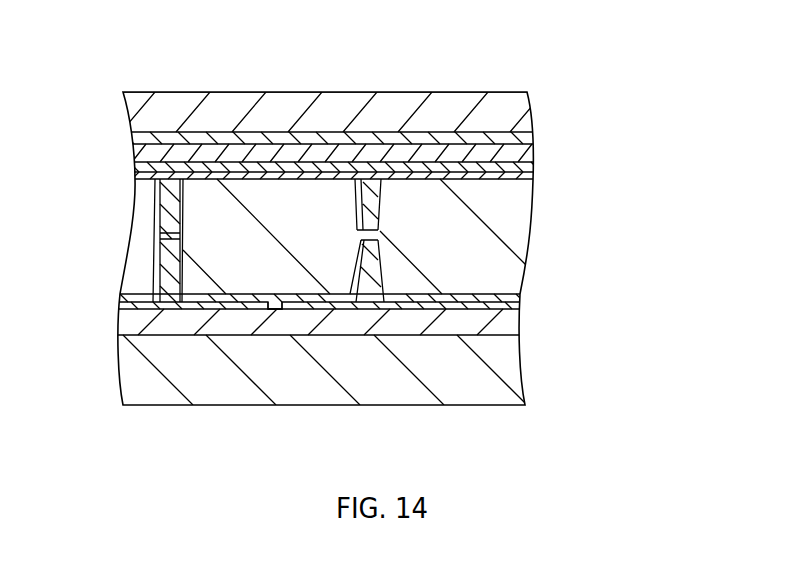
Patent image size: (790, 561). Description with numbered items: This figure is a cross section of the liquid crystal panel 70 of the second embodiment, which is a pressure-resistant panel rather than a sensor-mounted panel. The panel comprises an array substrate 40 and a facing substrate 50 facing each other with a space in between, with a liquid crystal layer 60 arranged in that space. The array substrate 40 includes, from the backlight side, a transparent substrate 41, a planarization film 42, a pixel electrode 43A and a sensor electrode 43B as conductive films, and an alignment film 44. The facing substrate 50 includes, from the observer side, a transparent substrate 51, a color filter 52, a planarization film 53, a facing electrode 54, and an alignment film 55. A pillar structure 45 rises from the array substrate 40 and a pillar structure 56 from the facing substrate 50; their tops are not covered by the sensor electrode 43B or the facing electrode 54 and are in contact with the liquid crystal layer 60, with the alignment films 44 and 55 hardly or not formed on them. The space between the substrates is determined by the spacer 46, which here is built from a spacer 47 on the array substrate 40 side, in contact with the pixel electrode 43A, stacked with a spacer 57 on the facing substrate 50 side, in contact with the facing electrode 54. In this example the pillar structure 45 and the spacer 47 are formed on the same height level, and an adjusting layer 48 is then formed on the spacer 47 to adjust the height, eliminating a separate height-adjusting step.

The liquid crystal panel 70 is at (644, 56).
The facing substrate 50 is at (606, 100).
The transparent substrate 51 is at (522, 108).
The color filter 52 is at (525, 136).
The planarization film 53 is at (528, 158).
The facing electrode 54 is at (535, 183).
The alignment film 55 is at (536, 200).
The liquid crystal layer 60 is at (520, 249).
The spacer 46 is at (58, 183).
The spacer 57 is at (161, 194).
The adjusting layer 48 is at (164, 237).
The spacer 47 is at (160, 277).
The pillar structure 56 is at (372, 212).
The pillar structure 45 is at (372, 290).
The array substrate 40 is at (606, 268).
The alignment film 44 is at (505, 288).
The pixel electrode 43A is at (510, 305).
The sensor electrode 43B is at (283, 310).
The planarization film 42 is at (506, 320).
The transparent substrate 41 is at (506, 359).